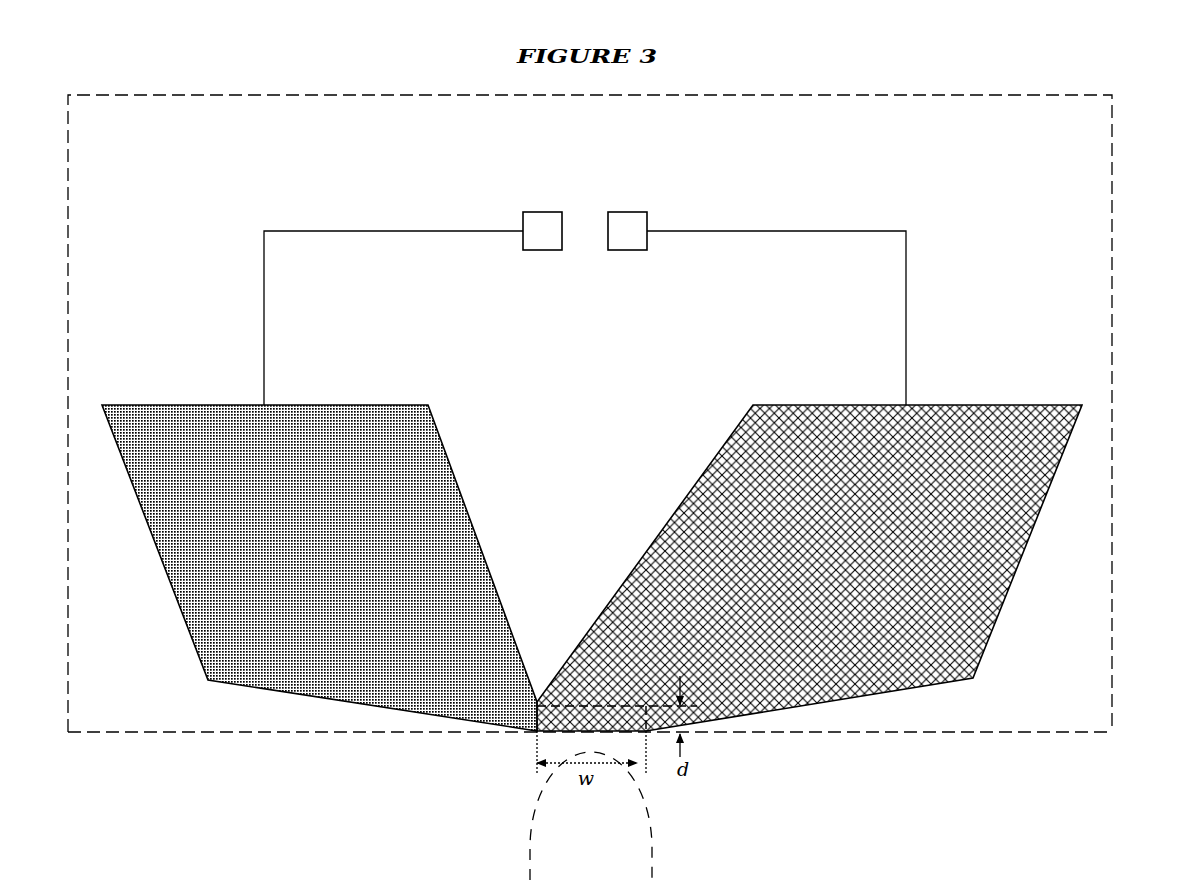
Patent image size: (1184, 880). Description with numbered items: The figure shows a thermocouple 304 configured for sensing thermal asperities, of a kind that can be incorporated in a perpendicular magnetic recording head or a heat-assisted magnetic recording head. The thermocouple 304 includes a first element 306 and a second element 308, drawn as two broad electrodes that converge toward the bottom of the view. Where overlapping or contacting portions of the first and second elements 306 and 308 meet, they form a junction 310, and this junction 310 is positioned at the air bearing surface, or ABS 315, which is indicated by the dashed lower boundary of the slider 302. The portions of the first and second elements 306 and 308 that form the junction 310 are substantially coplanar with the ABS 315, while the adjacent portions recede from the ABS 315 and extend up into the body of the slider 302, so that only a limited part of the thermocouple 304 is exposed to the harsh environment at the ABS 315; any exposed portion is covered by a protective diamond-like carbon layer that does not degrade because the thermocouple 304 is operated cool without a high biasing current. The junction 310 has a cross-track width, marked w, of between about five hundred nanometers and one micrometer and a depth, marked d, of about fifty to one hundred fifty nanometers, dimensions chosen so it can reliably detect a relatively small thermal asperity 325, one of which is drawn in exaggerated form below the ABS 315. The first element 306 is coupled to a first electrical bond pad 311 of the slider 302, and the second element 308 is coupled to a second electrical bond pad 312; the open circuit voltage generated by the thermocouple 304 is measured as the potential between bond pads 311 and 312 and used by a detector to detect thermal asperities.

The slider 302 is at (1113, 193).
The thermocouple 304 is at (740, 338).
The first element 306 is at (194, 616).
The second element 308 is at (1008, 562).
The junction 310 is at (557, 684).
The first electrical bond pad 311 is at (538, 212).
The second electrical bond pad 312 is at (627, 212).
The ABS (air bearing surface) 315 is at (450, 735).
The thermal asperity 325 is at (654, 845).